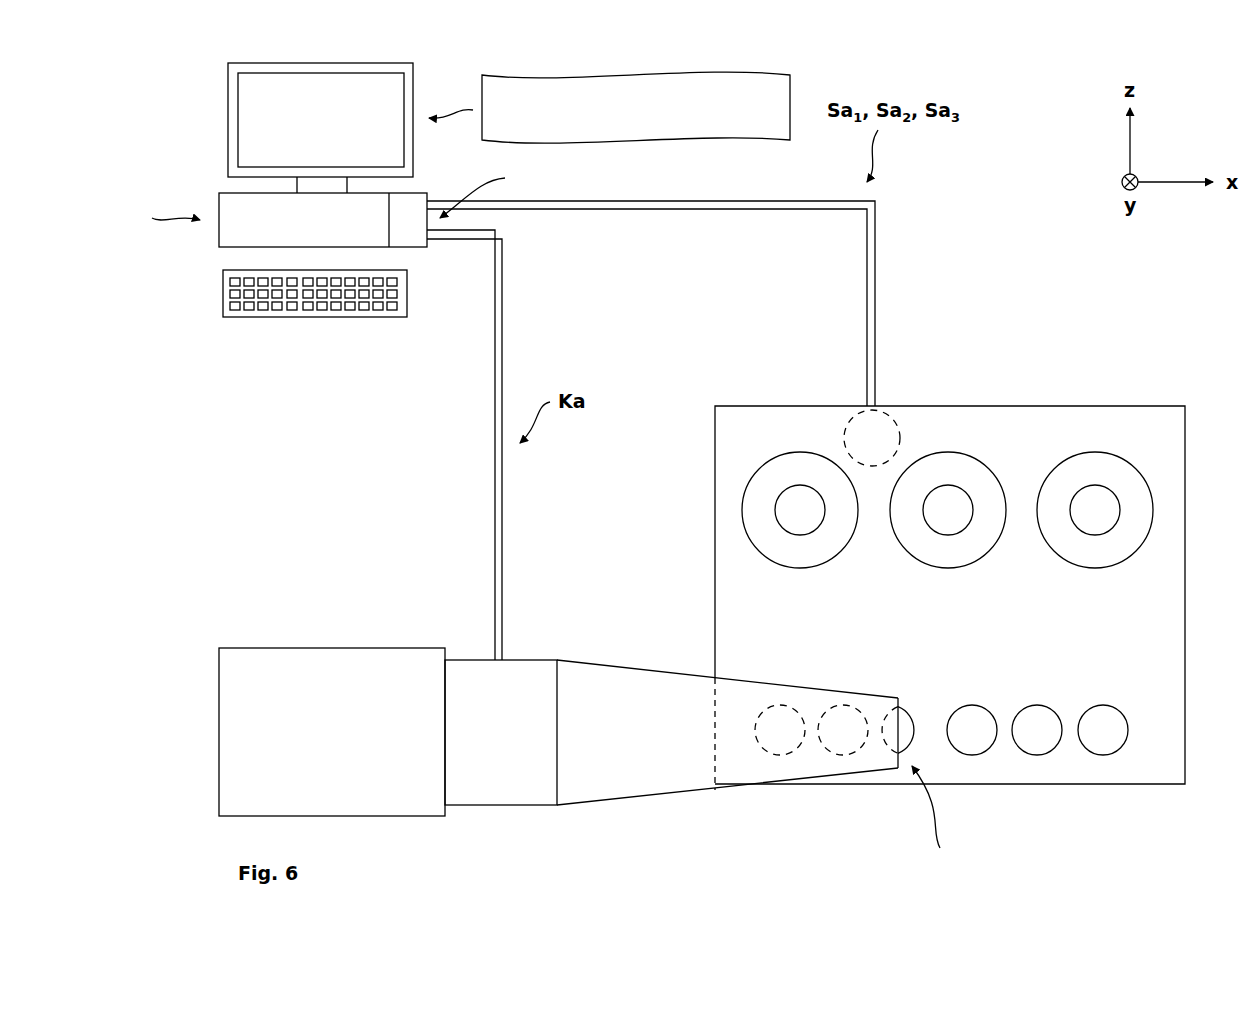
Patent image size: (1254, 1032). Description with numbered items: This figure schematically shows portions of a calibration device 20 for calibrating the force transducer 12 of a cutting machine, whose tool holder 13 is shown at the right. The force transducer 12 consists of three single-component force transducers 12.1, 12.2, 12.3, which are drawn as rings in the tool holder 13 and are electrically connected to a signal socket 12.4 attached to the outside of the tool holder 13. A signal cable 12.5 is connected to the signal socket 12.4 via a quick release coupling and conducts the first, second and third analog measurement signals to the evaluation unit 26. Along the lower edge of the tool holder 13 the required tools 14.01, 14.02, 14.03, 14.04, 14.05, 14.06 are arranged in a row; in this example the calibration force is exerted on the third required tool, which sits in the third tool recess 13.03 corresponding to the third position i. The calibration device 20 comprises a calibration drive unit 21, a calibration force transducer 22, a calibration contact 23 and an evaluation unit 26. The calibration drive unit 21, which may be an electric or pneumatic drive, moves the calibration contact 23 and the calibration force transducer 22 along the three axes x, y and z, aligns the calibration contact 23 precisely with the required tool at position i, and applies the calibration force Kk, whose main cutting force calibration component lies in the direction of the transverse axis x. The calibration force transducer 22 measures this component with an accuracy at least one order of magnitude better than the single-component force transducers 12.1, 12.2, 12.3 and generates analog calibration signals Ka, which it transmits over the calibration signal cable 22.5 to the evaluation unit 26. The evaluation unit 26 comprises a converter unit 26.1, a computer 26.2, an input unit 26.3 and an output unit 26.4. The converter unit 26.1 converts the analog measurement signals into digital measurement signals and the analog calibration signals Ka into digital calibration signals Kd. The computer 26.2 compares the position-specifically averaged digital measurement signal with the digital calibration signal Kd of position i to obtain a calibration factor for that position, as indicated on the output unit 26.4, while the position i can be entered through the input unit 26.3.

The force transducer 12 is at (1020, 361).
The first single-component force transducer 12.1 is at (795, 545).
The second single-component force transducer 12.2 is at (943, 545).
The third single-component force transducer 12.3 is at (1100, 545).
The signal socket 12.4 is at (850, 448).
The signal cable 12.5 is at (747, 209).
The tool holder 13 is at (1008, 447).
The third tool recess 13.03 is at (905, 702).
The required tool 14.01 is at (785, 755).
The required tool 14.02 is at (848, 755).
The required tool 14.03 is at (930, 743).
The required tool 14.04 is at (990, 748).
The required tool 14.05 is at (1055, 748).
The required tool 14.06 is at (1120, 748).
The calibration device 20 is at (356, 630).
The calibration drive unit 21 is at (305, 746).
The calibration force transducer 22 is at (484, 746).
The calibration signal cable 22.5 is at (503, 507).
The calibration contact 23 is at (703, 744).
The evaluation unit 26 is at (186, 147).
The converter unit 26.1 is at (409, 196).
The computer 26.2 is at (302, 235).
The input unit 26.3 is at (408, 285).
The output unit 26.4 is at (297, 126).